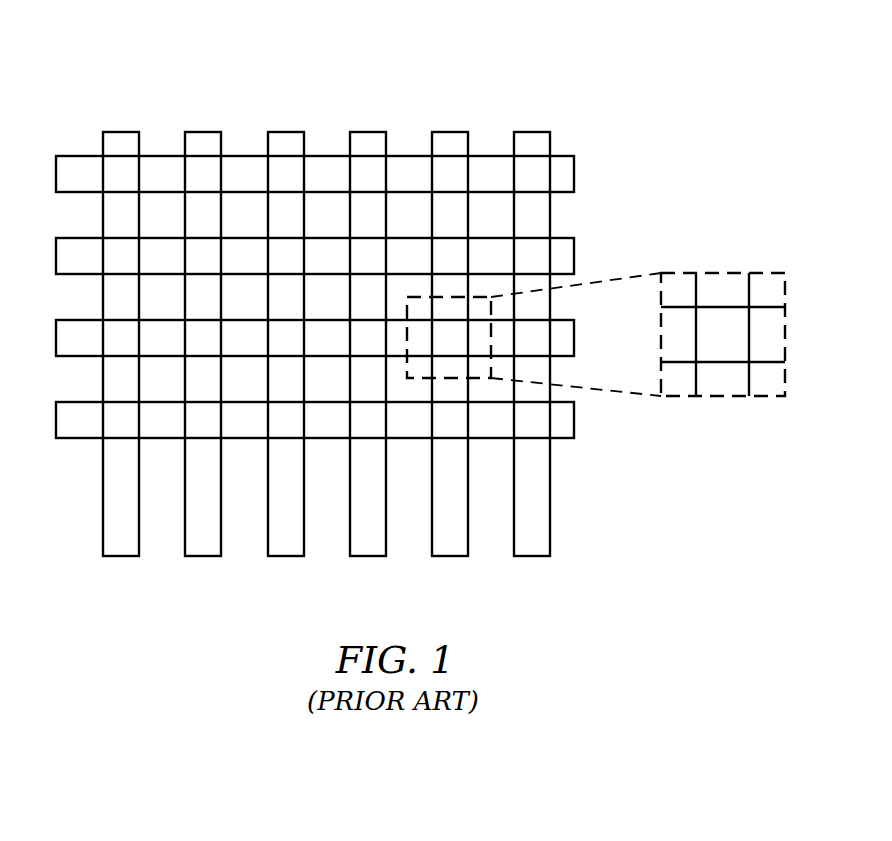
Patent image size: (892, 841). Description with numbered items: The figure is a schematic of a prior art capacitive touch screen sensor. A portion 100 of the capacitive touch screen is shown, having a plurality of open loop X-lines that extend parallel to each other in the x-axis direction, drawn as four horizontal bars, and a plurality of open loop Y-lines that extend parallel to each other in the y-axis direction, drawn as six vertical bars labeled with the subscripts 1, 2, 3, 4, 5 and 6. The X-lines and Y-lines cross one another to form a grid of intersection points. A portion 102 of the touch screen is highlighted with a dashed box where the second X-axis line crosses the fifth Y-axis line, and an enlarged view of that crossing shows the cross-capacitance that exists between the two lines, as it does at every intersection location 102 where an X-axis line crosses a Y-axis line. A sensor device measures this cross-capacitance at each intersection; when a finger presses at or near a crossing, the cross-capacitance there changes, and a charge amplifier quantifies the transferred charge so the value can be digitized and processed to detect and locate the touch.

The portion of a capacitive touch screen 100 is at (297, 307).
The intersection location 102 is at (732, 272).
The bit line Y1 1 is at (121, 364).
The bit line Y2 2 is at (203, 364).
The bit line Y3 3 is at (286, 364).
The bit line Y4 4 is at (368, 364).
The bit line Y5 5 is at (450, 364).
The bit line Y6 6 is at (532, 364).